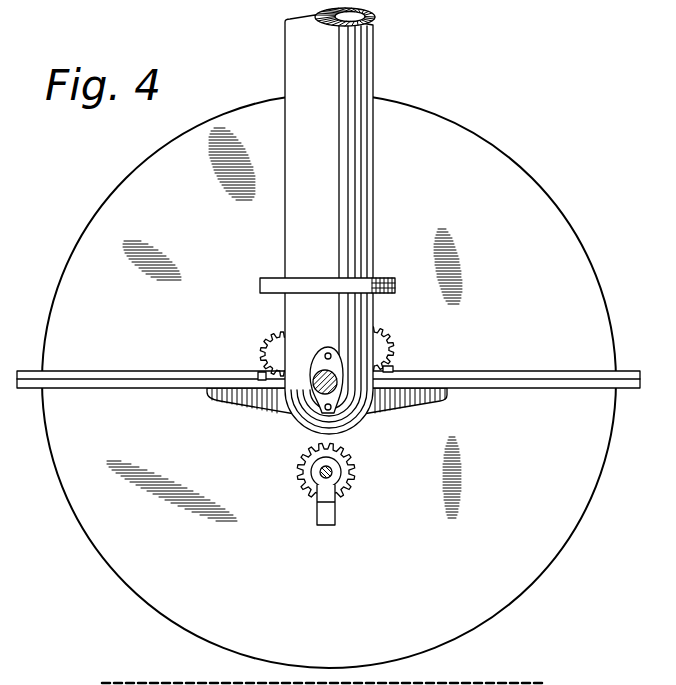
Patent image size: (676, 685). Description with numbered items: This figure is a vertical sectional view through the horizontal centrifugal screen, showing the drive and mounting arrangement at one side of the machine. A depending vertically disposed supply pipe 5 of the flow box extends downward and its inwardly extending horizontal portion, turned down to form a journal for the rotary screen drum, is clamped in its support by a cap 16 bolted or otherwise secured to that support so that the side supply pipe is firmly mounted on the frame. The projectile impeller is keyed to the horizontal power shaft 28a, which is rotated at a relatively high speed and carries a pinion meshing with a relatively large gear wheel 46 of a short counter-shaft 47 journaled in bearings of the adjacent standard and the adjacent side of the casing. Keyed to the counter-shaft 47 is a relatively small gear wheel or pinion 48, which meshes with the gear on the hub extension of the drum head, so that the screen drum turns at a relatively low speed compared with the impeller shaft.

The supply pipe 5 is at (370, 196).
The cap 16 is at (282, 352).
The gear wheel or pinion 48 is at (388, 353).
The gear wheel 46 is at (352, 468).
The counter-shaft 47 is at (333, 474).
The power shaft 28a is at (327, 383).